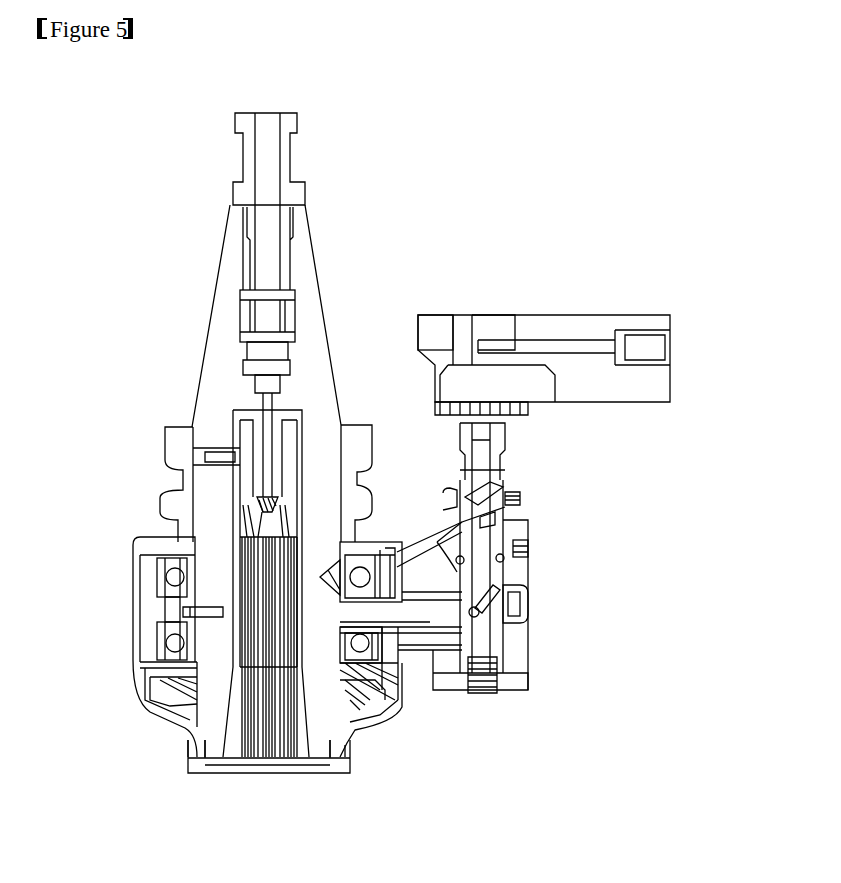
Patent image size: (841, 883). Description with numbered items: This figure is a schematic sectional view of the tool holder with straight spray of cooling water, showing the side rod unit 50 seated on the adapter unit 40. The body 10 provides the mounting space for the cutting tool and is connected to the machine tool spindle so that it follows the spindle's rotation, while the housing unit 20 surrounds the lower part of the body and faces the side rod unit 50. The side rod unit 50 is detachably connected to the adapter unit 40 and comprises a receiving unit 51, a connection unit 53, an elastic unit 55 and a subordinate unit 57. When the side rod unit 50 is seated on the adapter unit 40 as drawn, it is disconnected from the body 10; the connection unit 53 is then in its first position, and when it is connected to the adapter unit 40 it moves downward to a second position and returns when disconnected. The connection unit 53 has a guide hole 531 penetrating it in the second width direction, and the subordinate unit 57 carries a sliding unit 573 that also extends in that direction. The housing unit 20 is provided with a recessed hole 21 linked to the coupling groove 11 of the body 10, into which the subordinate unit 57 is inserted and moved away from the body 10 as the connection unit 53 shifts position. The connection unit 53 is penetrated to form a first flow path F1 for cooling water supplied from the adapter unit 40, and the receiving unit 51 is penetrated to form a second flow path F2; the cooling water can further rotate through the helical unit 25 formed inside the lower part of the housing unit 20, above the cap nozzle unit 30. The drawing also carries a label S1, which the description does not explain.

The body 10 is at (312, 272).
The coupling groove 11 is at (370, 543).
The housing unit 20 is at (140, 601).
The recessed hole 21 is at (393, 542).
The helical unit 25 is at (355, 683).
The cap nozzle unit 30 is at (195, 773).
The adapter unit 40 is at (650, 385).
The side rod unit 50 is at (652, 527).
The receiving unit 51 is at (530, 566).
The connection unit 53 is at (522, 557).
The guide hole 531 is at (520, 577).
The elastic unit 55 is at (492, 690).
The subordinate unit 57 is at (415, 640).
The sliding unit 573 is at (522, 608).
The first flow path F1 is at (490, 487).
The second flow path F2 is at (493, 540).
The collet section S1 is at (269, 772).